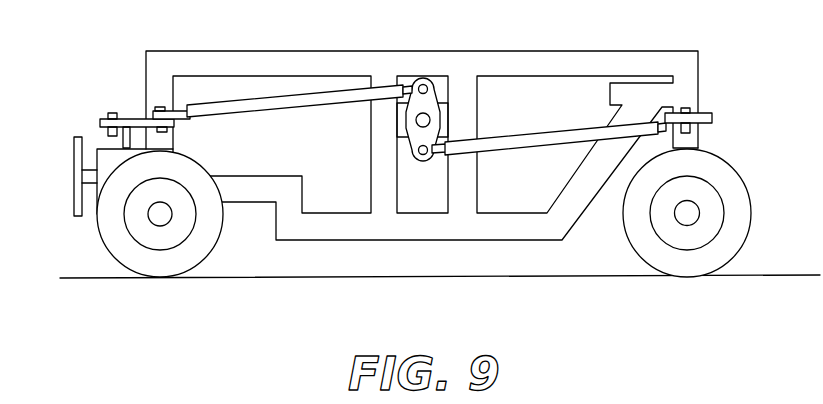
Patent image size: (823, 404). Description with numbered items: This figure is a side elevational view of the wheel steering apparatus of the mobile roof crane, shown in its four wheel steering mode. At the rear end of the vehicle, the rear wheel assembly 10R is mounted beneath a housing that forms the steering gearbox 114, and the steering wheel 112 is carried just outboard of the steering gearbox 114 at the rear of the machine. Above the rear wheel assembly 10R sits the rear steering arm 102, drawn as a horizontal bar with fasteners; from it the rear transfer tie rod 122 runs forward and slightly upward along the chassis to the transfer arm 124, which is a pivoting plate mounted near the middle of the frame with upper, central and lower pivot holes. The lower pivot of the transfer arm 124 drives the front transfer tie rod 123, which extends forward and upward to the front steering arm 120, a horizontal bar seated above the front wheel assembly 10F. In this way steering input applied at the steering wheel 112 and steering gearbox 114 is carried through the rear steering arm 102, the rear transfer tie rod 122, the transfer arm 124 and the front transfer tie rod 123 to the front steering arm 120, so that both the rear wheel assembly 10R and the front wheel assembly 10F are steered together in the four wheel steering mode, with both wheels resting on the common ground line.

The rear steering arm 102 is at (133, 120).
The steering gearbox 114 is at (110, 155).
The steering wheel 112 is at (78, 162).
The rear transfer tie rod 122 is at (263, 107).
The transfer arm 124 is at (433, 102).
The front transfer tie rod 123 is at (535, 137).
The front steering arm 120 is at (705, 118).
The rear wheel assembly 10R is at (122, 267).
The front wheel assembly 10F is at (728, 267).